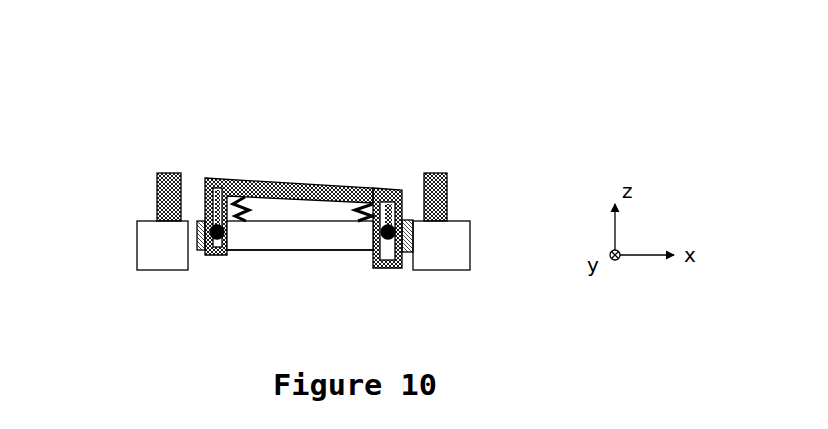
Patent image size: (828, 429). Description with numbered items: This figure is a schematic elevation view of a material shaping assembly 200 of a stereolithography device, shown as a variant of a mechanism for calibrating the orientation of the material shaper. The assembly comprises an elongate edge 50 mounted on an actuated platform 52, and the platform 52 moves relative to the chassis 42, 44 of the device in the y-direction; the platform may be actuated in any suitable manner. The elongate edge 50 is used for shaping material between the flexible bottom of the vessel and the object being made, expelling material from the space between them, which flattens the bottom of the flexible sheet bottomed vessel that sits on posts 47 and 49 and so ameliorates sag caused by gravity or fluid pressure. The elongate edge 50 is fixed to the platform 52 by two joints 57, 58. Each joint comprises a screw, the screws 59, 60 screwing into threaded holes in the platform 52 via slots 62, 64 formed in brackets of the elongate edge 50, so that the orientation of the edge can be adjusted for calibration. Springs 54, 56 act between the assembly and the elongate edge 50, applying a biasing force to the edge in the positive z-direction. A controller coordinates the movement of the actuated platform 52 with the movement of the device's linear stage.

The material shaping assembly 200 is at (251, 67).
The chassis 42 is at (146, 253).
The chassis 44 is at (453, 254).
The post 47 is at (165, 208).
The post 49 is at (442, 194).
The elongate edge 50 is at (285, 198).
The actuated platform 52 is at (318, 250).
The spring 54 is at (245, 222).
The spring 56 is at (357, 212).
The joint 57 is at (203, 177).
The joint 58 is at (372, 186).
The screw 59 is at (205, 256).
The screw 60 is at (392, 268).
The slot 62 is at (216, 187).
The slot 64 is at (386, 201).